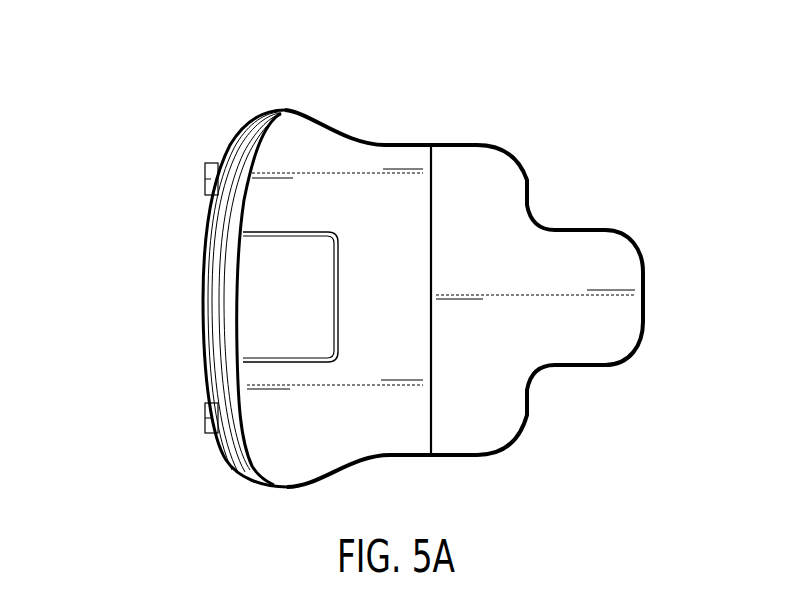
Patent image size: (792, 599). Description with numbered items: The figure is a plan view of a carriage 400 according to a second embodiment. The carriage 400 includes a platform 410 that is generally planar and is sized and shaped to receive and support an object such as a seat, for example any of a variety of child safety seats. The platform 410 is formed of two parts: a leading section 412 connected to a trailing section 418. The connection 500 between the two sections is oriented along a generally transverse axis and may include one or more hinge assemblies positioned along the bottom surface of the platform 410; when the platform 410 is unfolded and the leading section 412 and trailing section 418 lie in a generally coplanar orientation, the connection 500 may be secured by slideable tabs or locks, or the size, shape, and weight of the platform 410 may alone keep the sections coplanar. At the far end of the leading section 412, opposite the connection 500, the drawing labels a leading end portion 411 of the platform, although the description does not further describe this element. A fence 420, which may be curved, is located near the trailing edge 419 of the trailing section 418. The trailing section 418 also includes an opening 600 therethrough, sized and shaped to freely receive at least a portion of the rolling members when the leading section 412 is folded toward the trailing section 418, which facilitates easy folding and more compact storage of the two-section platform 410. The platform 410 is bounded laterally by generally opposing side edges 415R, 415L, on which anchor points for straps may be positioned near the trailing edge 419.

The carriage 400 is at (637, 104).
The platform 410 is at (580, 229).
The end portion 411 is at (668, 292).
The leading section 412 is at (475, 425).
The left side edge 415L is at (492, 472).
The right side edge 415R is at (394, 106).
The trailing section 418 is at (397, 426).
The trailing edge 419 is at (160, 308).
The fence 420 is at (223, 207).
The connection 500 is at (432, 255).
The opening 600 is at (328, 290).